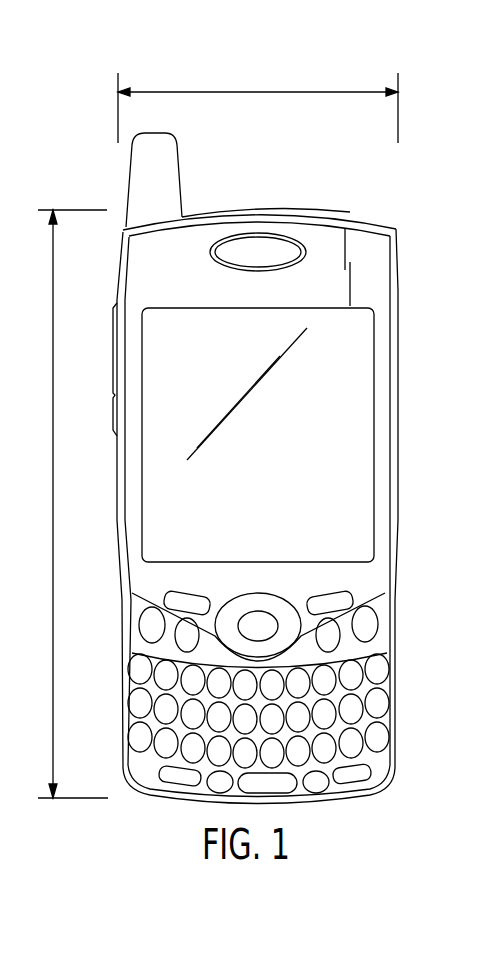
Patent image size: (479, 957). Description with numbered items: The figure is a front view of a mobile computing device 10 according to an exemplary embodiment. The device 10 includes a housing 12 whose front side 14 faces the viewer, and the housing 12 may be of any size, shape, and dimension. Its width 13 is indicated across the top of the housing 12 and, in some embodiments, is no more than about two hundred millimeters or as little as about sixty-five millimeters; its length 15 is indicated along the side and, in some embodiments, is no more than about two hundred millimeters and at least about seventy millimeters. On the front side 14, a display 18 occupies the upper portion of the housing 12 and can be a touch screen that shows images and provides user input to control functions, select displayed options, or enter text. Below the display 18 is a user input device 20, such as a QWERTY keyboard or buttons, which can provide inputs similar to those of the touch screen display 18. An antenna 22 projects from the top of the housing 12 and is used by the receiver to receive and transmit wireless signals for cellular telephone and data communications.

The device 10 is at (304, 172).
The housing 12 is at (368, 250).
The width 13 is at (273, 92).
The front side 14 is at (176, 276).
The length 15 is at (53, 485).
The display 18 is at (360, 378).
The user input device 20 is at (380, 663).
The antenna 22 is at (173, 188).